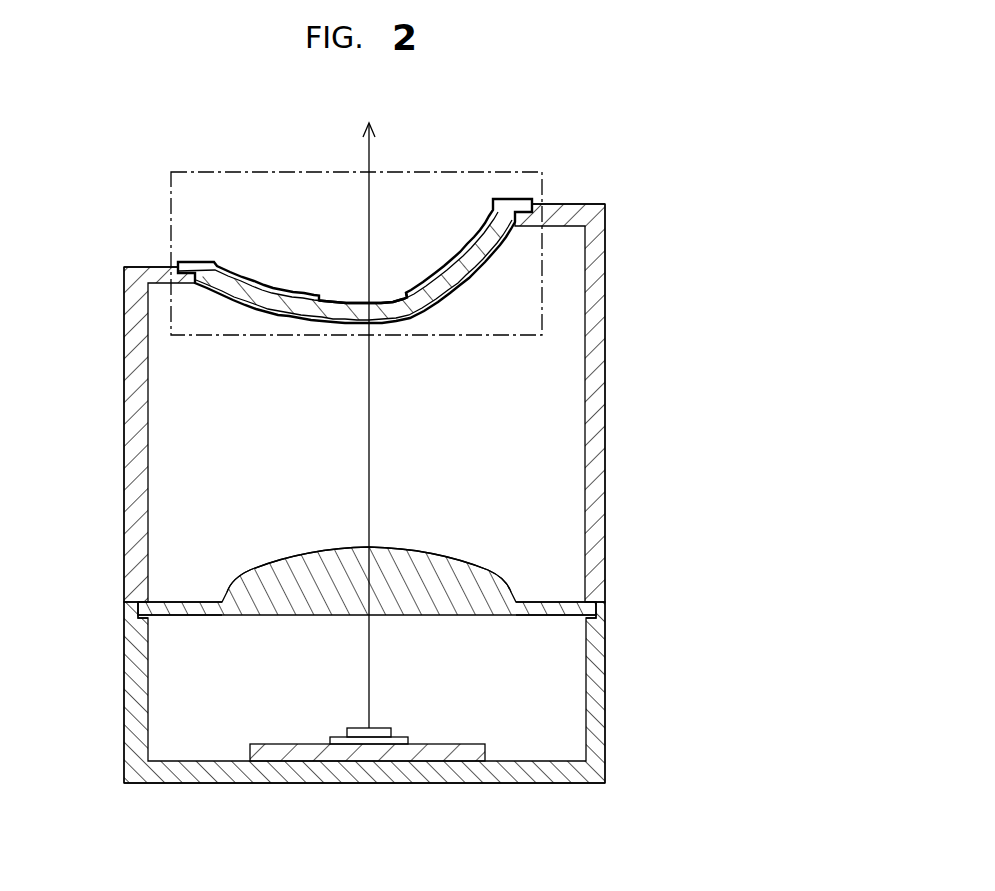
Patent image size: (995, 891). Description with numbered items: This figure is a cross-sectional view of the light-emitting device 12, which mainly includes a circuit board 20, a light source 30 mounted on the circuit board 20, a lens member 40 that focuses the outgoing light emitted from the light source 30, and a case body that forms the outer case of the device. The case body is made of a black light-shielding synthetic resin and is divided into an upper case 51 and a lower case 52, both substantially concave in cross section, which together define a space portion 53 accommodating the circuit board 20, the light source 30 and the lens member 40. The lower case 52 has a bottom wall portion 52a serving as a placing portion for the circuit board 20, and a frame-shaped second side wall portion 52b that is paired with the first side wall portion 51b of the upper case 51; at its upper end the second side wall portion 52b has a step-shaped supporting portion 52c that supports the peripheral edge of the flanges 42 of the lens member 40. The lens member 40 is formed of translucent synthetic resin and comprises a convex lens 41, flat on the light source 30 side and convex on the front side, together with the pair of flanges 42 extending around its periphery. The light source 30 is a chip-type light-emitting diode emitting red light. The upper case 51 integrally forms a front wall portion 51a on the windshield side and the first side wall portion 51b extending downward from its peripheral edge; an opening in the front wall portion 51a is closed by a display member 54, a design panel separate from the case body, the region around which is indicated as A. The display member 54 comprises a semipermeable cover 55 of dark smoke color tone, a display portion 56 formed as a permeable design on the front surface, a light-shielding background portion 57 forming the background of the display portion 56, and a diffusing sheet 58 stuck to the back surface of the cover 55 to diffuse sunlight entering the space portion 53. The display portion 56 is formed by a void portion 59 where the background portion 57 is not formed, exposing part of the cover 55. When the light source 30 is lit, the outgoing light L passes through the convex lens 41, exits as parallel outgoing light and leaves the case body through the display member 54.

The light-emitting device 12 is at (634, 184).
The circuit board 20 is at (468, 755).
The light source 30 is at (357, 730).
The lens member 40 is at (437, 548).
The convex lens 41 is at (307, 560).
The flanges 42 is at (181, 612).
The upper case 51 is at (608, 358).
The front wall portion 51a is at (163, 275).
The first side wall portion 51b is at (140, 382).
The lower case 52 is at (608, 748).
The bottom wall portion 52a is at (297, 772).
The second side wall portion 52b is at (140, 712).
The supporting portion 52c is at (140, 620).
The space portion 53 is at (178, 485).
The display member 54 is at (297, 245).
The cover 55 is at (467, 275).
The display portion 56 is at (353, 293).
The background portion 57 is at (233, 276).
The diffusing sheet 58 is at (343, 323).
The void portion 59 is at (402, 288).
The region A is at (321, 237).
The outgoing light L is at (371, 442).